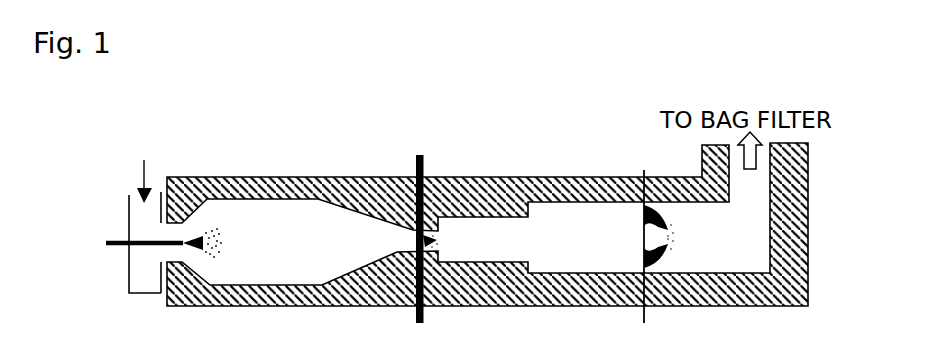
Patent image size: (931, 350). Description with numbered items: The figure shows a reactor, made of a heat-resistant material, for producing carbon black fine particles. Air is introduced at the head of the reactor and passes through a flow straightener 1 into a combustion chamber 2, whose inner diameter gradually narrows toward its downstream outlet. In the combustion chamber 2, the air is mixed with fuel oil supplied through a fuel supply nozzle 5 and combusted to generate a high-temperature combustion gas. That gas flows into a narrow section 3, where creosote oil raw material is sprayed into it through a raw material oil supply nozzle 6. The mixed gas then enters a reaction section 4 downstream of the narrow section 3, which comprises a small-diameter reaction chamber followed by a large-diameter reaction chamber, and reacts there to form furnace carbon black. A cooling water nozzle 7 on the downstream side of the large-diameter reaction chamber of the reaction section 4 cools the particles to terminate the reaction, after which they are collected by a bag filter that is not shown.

The flow straightener 1 is at (142, 214).
The combustion chamber 2 is at (448, 188).
The narrow section 3 is at (411, 245).
The reaction section 4 is at (487, 224).
The fuel supply nozzle 5 is at (151, 243).
The raw material oil supply nozzle 6 is at (416, 220).
The cooling water nozzle 7 is at (655, 234).